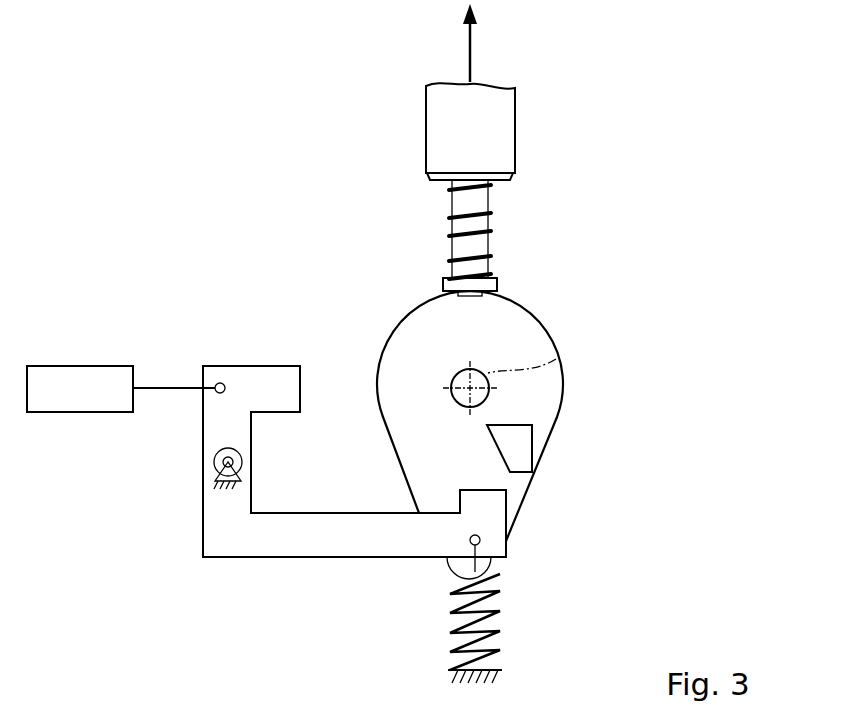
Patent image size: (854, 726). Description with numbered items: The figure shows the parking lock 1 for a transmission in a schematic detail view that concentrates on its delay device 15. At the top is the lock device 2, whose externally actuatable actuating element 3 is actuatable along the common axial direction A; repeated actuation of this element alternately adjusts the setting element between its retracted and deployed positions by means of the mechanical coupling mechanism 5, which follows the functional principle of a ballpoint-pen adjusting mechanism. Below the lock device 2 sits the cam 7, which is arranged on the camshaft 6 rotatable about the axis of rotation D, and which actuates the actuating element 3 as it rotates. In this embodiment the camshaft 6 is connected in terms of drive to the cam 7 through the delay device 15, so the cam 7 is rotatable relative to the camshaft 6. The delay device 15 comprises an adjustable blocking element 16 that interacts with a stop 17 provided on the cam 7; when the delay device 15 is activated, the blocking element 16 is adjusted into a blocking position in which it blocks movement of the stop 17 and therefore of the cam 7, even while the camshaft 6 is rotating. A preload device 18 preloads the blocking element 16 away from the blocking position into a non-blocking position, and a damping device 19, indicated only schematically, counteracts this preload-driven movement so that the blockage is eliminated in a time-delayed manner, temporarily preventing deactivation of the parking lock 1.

The parking lock 1 is at (691, 154).
The lock device 2 is at (547, 134).
The actuating element 3 is at (510, 242).
The mechanical coupling mechanism 5 is at (463, 140).
The camshaft 6 is at (459, 378).
The cam 7 is at (550, 392).
The delay device 15 is at (239, 334).
The blocking element 16 is at (338, 527).
The stop 17 is at (520, 445).
The preload device 18 is at (503, 612).
The damping device 19 is at (82, 380).
The axial direction A is at (471, 48).
The axis of rotation D is at (556, 359).